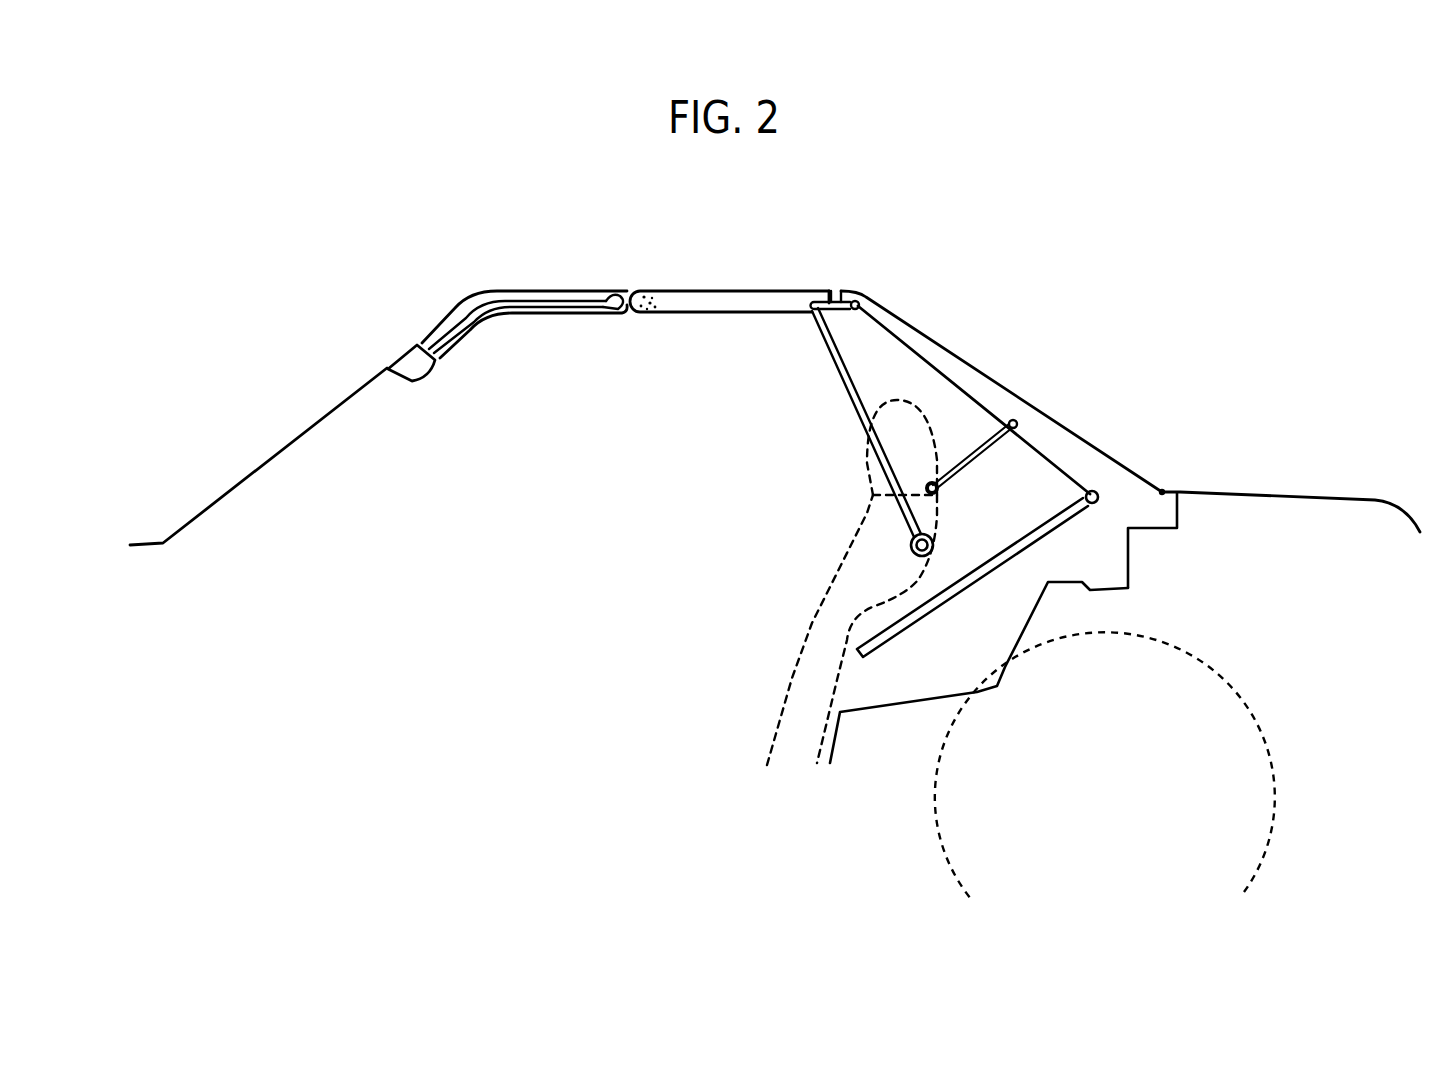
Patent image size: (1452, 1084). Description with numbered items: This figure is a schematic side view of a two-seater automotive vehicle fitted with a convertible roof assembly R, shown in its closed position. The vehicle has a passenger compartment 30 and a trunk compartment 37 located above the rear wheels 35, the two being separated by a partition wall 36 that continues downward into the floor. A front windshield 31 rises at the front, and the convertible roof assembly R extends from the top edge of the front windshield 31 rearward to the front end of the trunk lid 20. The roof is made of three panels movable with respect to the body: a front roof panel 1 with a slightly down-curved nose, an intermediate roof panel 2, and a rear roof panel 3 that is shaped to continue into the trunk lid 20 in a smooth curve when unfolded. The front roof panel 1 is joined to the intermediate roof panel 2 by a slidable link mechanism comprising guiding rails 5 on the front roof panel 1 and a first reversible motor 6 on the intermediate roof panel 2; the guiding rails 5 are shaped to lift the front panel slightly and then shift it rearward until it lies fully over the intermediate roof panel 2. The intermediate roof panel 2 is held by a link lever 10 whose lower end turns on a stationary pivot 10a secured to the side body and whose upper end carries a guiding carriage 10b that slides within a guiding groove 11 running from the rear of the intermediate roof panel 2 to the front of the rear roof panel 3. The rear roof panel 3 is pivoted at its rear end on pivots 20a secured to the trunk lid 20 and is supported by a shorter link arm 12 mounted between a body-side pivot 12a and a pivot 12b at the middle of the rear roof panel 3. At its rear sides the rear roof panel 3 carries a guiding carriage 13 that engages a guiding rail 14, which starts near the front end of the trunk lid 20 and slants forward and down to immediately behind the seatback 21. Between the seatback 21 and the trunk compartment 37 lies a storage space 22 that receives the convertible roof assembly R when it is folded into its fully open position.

The front roof panel 1 is at (550, 290).
The intermediate roof panel 2 is at (745, 290).
The rear roof panel 3 is at (920, 332).
The guiding rail 5 is at (566, 314).
The first reversible motor 6 is at (658, 322).
The link lever 10 is at (853, 400).
The stationary pivot 10a is at (935, 545).
The guiding carriage 10b is at (812, 312).
The guiding groove 11 is at (843, 291).
The link arm 12 is at (962, 456).
The pivot 12a is at (940, 489).
The pivot 12b is at (1016, 420).
The guiding carriage 13 is at (1100, 492).
The guiding rail 14 is at (954, 596).
The trunk lid 20 is at (1328, 495).
The pivot 20a is at (1166, 491).
The seatback 21 is at (812, 623).
The storage space 22 is at (1103, 555).
The passenger compartment 30 is at (560, 510).
The front windshield 31 is at (304, 434).
The rear wheel 35 is at (1262, 736).
The partition wall 36 is at (1182, 514).
The trunk compartment 37 is at (1288, 580).
The convertible roof assembly R is at (874, 266).